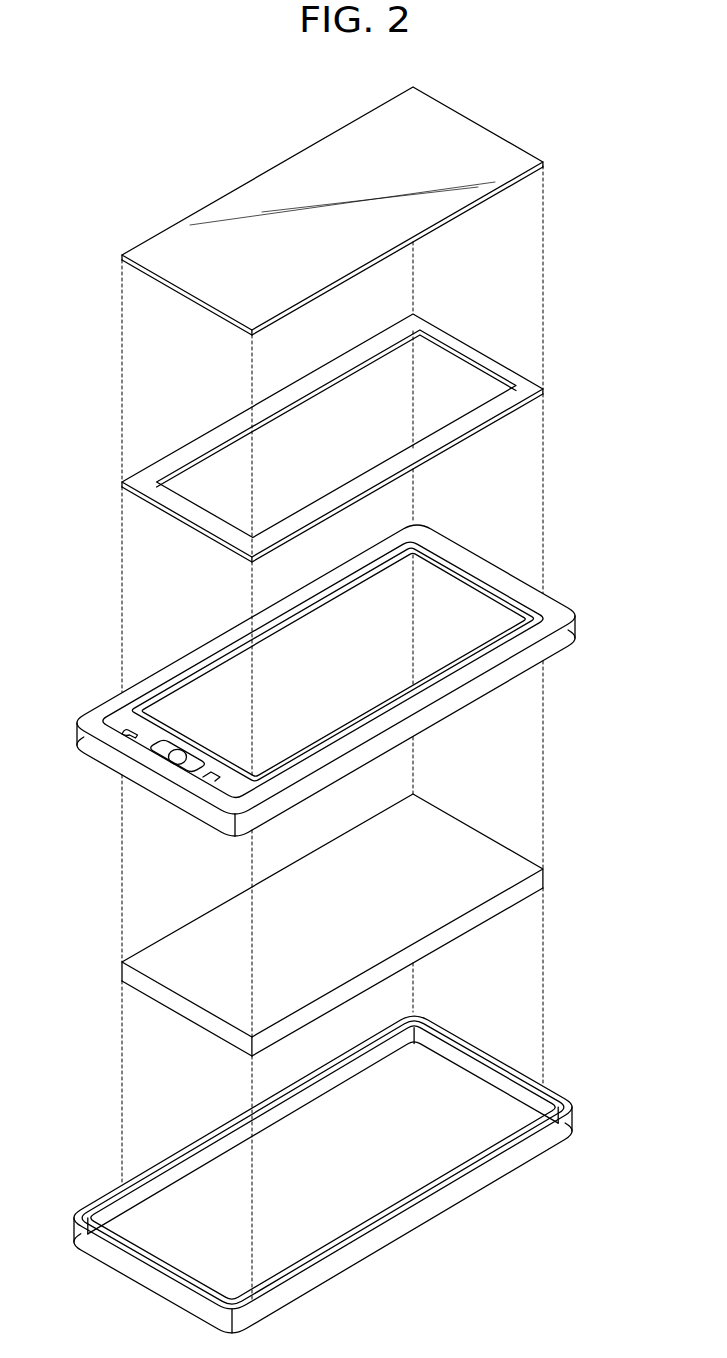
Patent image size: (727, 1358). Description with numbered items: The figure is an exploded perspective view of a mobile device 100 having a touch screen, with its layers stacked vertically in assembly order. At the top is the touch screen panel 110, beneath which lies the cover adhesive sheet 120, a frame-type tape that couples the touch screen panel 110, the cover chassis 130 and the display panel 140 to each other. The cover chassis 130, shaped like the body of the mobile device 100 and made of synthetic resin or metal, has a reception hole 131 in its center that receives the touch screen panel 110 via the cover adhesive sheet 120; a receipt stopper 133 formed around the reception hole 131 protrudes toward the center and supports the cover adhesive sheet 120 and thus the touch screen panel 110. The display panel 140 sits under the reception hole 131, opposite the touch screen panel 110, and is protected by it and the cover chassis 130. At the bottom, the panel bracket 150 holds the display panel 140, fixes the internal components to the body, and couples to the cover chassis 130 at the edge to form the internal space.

The mobile device 100 is at (115, 201).
The touch screen panel 110 is at (491, 143).
The cover adhesive sheet 120 is at (463, 380).
The cover chassis 130 is at (569, 609).
The reception hole 131 is at (437, 603).
The receipt stopper 133 is at (486, 583).
The display panel 140 is at (480, 843).
The panel bracket 150 is at (568, 1128).